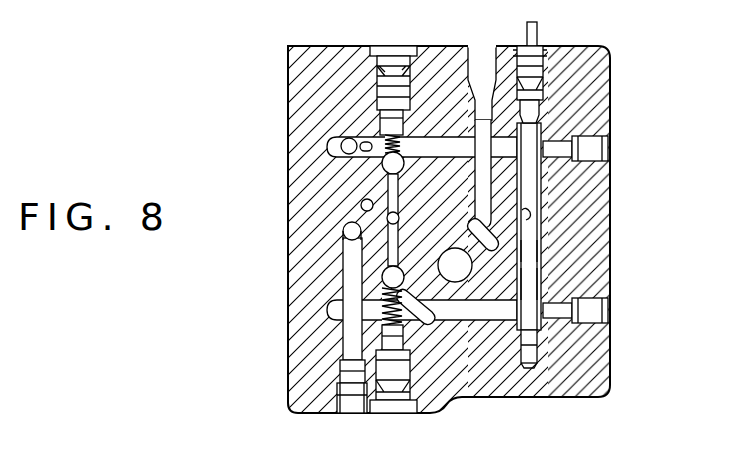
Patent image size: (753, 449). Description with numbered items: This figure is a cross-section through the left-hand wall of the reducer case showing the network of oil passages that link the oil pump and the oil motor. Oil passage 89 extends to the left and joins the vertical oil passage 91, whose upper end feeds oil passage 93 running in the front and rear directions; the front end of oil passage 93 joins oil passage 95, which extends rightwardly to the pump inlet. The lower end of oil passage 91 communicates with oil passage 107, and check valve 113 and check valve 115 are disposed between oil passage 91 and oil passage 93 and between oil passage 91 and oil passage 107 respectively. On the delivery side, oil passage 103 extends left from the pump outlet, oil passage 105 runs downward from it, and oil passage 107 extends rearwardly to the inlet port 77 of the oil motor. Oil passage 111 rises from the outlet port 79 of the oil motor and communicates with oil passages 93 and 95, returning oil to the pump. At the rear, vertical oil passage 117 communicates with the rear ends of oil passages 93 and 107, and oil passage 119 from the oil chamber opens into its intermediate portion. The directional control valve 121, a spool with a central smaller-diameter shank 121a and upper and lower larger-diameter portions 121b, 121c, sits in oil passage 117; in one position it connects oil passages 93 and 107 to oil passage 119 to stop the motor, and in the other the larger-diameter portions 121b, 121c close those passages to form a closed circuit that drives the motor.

The inlet port 77 is at (428, 318).
The outlet port 79 is at (472, 264).
The oil passage 89 is at (400, 217).
The oil passage 91 is at (398, 182).
The oil passage 93 is at (362, 140).
The oil passage 95 is at (323, 137).
The oil passage 103 is at (343, 228).
The oil passage 105 is at (347, 263).
The oil passage 107 is at (340, 313).
The oil passage 111 is at (470, 150).
The check valve 113 is at (380, 162).
The check valve 115 is at (402, 288).
The vertical oil passage 117 is at (530, 282).
The oil passage 119 is at (545, 222).
The directional control valve 121 is at (530, 147).
The central smaller-diameter shank 121a is at (543, 123).
The upper larger-diameter portion 121b is at (530, 250).
The lower larger-diameter portion 121c is at (527, 320).